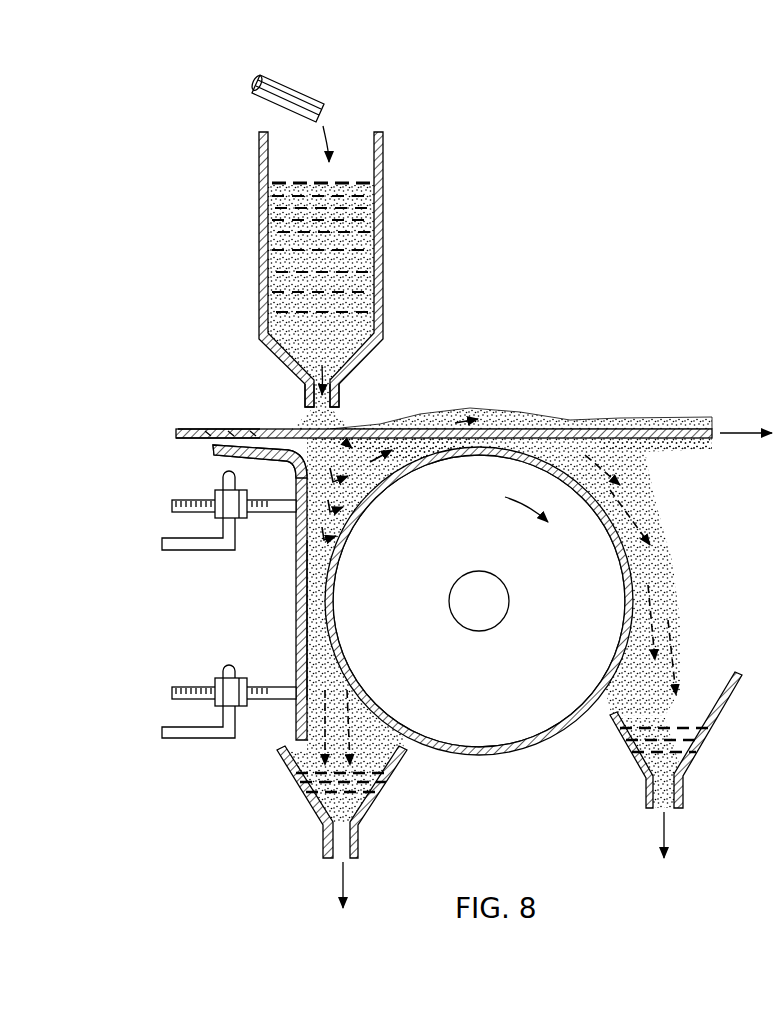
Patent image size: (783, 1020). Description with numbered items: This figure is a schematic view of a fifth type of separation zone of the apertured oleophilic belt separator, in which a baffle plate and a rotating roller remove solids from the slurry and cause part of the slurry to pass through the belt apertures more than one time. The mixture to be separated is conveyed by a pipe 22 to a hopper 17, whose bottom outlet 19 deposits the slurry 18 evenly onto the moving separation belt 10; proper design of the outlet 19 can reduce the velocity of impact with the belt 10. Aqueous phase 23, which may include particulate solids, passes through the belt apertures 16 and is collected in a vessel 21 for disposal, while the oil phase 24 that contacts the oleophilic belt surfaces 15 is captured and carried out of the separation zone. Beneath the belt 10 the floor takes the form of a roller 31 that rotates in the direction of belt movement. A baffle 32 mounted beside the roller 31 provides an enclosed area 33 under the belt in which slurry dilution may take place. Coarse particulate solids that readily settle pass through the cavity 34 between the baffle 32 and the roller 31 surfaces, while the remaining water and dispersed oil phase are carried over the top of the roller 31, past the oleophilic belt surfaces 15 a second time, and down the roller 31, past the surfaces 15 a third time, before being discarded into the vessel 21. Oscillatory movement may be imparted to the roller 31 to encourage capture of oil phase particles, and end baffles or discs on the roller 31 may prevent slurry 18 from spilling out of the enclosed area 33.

The separation belt 10 is at (625, 420).
The oleophilic belt surfaces 15 is at (218, 428).
The belt apertures 16 is at (200, 428).
The hopper 17 is at (259, 234).
The slurry 18 is at (360, 243).
The hopper outlet 19 is at (339, 397).
The vessel 21 is at (290, 778).
The pipe 22 is at (290, 84).
The aqueous phase 23 is at (660, 588).
The oil phase 24 is at (672, 447).
The roller 31 is at (410, 627).
The baffle 32 is at (296, 598).
The enclosed area 33 is at (300, 478).
The cavity 34 is at (318, 650).